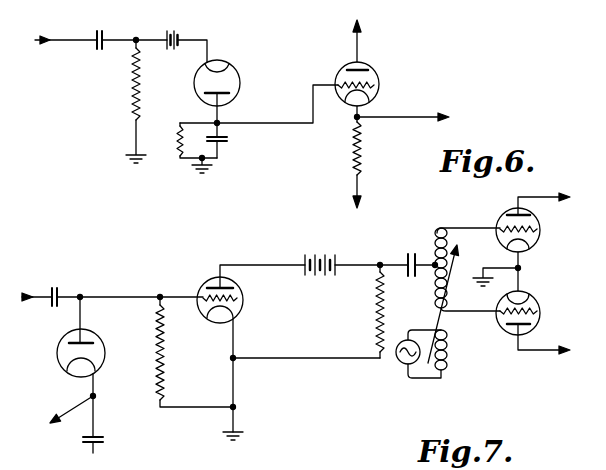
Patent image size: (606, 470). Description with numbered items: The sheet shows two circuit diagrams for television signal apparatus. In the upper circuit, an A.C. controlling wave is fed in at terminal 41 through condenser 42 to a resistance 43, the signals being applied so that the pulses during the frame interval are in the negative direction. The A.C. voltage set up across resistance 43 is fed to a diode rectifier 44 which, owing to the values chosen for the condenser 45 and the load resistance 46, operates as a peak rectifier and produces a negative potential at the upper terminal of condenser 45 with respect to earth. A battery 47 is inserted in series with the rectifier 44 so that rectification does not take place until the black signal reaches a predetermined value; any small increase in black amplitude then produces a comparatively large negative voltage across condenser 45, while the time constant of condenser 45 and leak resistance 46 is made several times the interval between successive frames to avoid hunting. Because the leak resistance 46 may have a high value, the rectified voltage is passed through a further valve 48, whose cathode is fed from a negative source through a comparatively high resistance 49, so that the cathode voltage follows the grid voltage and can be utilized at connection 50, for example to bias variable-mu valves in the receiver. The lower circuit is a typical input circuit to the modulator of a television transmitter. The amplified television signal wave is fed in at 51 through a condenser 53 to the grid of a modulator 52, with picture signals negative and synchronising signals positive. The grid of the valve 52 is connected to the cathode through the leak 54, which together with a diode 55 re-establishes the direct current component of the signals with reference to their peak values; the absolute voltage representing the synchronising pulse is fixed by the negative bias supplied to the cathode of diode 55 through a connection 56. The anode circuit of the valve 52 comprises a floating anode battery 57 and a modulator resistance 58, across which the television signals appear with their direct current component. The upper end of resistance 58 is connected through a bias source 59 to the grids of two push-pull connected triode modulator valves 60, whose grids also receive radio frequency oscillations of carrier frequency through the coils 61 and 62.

In FIG. 6, the terminal 41 is at (88, 38).
In FIG. 6, the condenser 42 is at (103, 38).
In FIG. 6, the resistance 43 is at (133, 87).
In FIG. 6, the diode rectifier 44 is at (240, 82).
In FIG. 6, the condenser 45 is at (223, 142).
In FIG. 6, the load resistance 46 is at (177, 147).
In FIG. 6, the battery 47 is at (179, 37).
In FIG. 6, the valve 48 is at (374, 76).
In FIG. 6, the resistance 49 is at (365, 171).
In FIG. 6, the connection 50 is at (426, 112).
In FIG. 7, the input 51 is at (50, 288).
In FIG. 7, the modulator 52 is at (209, 275).
In FIG. 7, the condenser 53 is at (61, 290).
In FIG. 7, the leak 54 is at (157, 351).
In FIG. 7, the diode 55 is at (59, 350).
In FIG. 7, the connection 56 is at (73, 408).
In FIG. 7, the floating anode battery 57 is at (306, 258).
In FIG. 7, the modulator resistance 58 is at (377, 313).
In FIG. 7, the source 59 is at (406, 254).
In FIG. 7, the push-pull connected triode modulator valves 60 is at (539, 228).
In FIG. 7, the coil 61 is at (446, 365).
In FIG. 7, the coil 62 is at (435, 233).